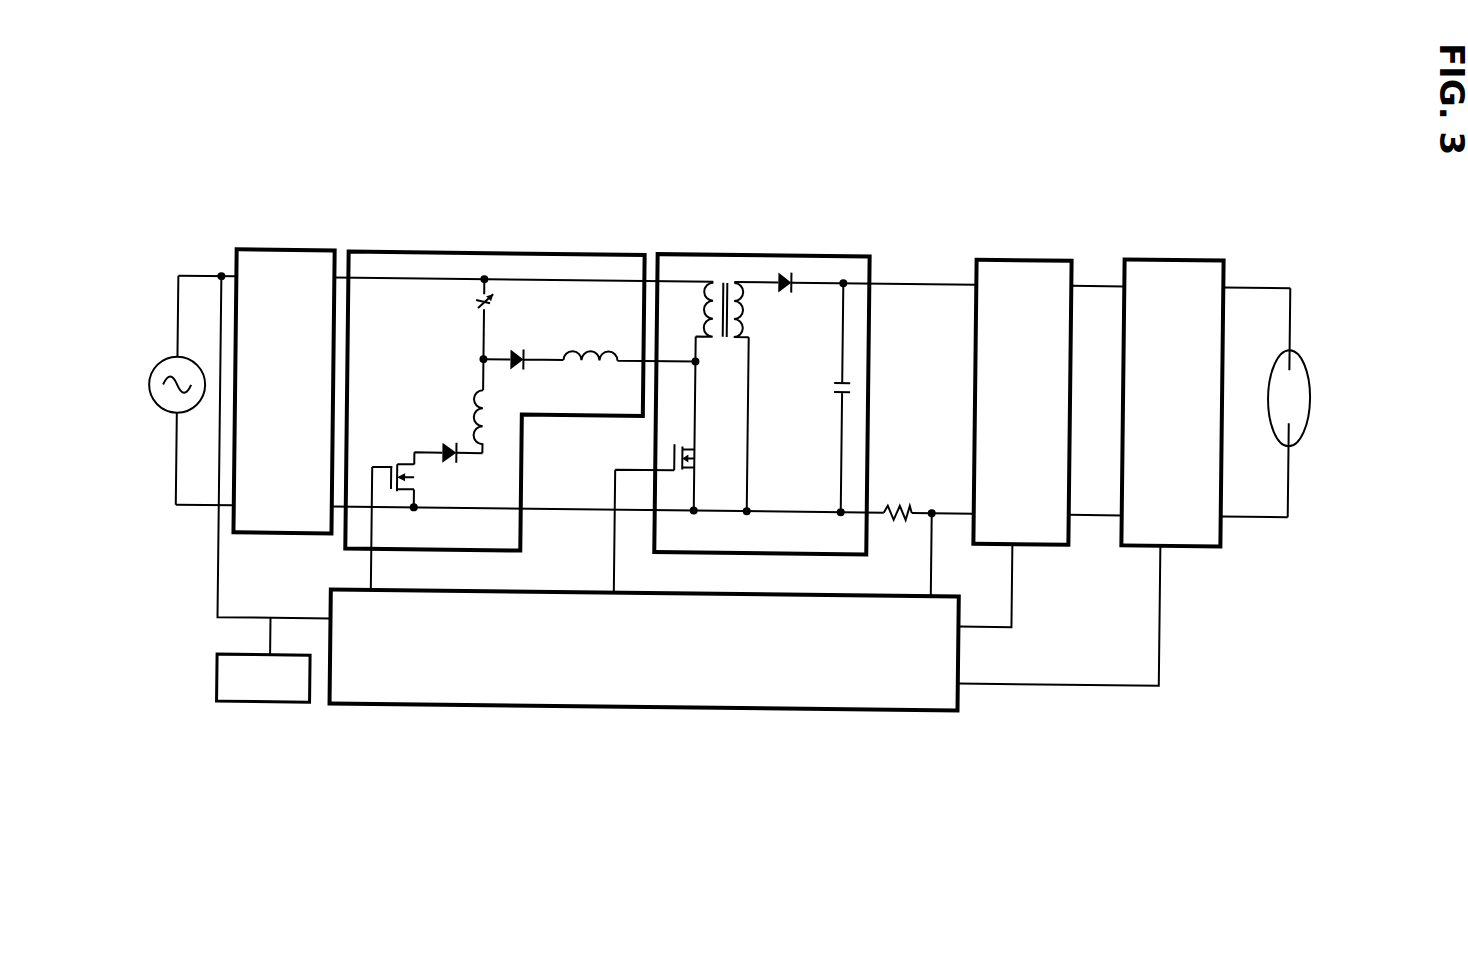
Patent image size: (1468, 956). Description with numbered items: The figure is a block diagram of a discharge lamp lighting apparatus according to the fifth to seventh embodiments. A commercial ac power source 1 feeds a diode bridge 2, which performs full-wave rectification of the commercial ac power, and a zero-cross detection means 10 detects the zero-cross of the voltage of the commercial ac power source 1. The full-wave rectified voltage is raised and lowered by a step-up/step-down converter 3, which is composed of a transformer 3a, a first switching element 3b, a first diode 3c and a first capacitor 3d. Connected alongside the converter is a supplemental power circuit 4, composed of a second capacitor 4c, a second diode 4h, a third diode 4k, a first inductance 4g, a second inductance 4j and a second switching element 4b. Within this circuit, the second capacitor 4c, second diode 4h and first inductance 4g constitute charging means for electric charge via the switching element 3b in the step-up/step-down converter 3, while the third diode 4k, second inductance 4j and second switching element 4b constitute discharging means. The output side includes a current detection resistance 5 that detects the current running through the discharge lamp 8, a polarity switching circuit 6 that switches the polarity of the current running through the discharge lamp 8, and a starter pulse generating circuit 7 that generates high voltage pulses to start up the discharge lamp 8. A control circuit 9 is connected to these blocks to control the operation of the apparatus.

The commercial ac power source 1 is at (154, 372).
The diode bridge 2 is at (311, 255).
The step-up/step-down converter 3 is at (762, 362).
The transformer 3a is at (708, 318).
The first switching element 3b is at (695, 450).
The first diode 3c is at (790, 295).
The first capacitor 3d is at (835, 386).
The supplemental power circuit 4 is at (521, 362).
The second switching element 4b is at (397, 472).
The second capacitor 4c is at (479, 310).
The first inductance 4g is at (585, 367).
The second diode 4h is at (522, 353).
The second inductance 4j is at (474, 415).
The third diode 4k is at (450, 473).
The current detection resistance 5 is at (900, 503).
The polarity switching circuit 6 is at (1028, 257).
The starter pulse generating circuit 7 is at (1176, 255).
The discharge lamp 8 is at (1307, 358).
The control circuit 9 is at (423, 709).
The zero-cross detection means 10 is at (273, 710).